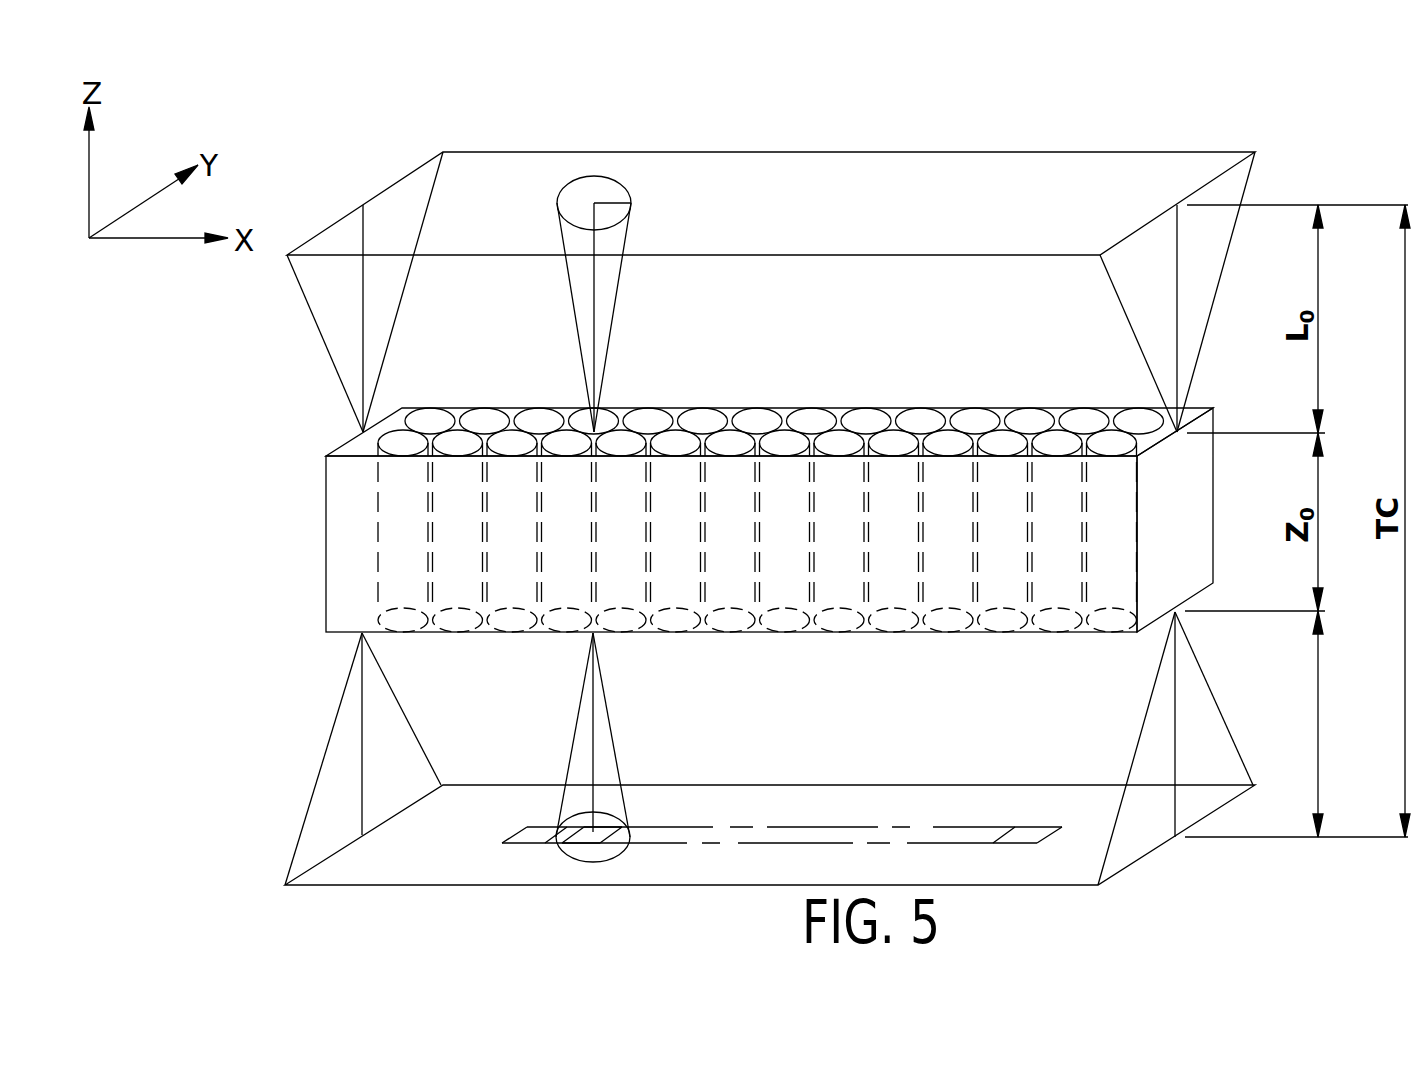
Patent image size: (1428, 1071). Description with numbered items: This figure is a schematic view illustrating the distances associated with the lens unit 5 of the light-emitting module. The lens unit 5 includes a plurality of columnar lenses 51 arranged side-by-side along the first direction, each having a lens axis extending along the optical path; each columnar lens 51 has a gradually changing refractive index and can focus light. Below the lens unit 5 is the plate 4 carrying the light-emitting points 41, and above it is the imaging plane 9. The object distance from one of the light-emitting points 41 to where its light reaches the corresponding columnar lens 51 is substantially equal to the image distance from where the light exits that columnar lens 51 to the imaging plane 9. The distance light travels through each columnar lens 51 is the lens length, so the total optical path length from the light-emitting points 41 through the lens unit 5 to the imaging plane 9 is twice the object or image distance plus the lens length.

The imaging plane 9 is at (968, 168).
The lens unit 5 is at (706, 514).
The columnar lens 51 is at (403, 447).
The lower plate 4 is at (737, 879).
The light-emitting point 41 is at (578, 840).